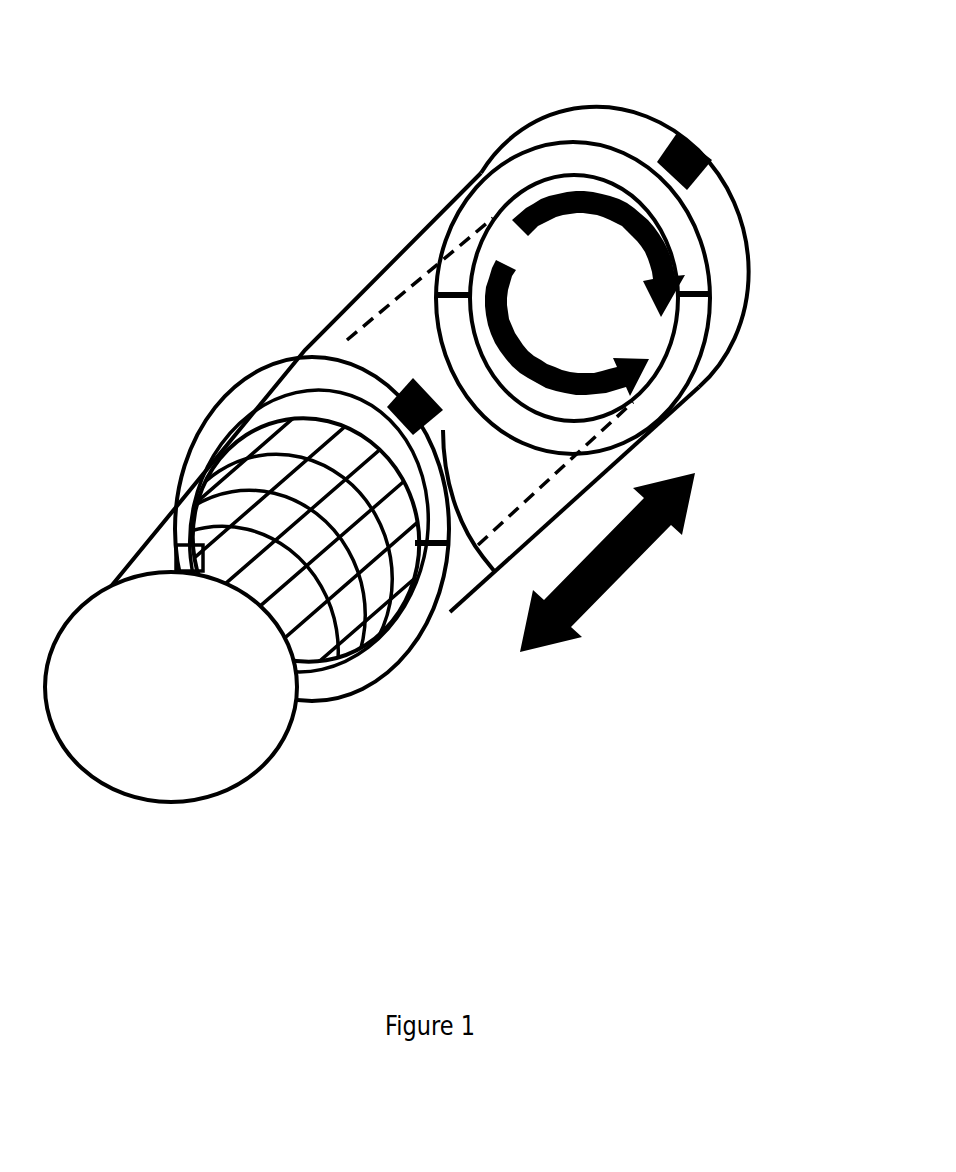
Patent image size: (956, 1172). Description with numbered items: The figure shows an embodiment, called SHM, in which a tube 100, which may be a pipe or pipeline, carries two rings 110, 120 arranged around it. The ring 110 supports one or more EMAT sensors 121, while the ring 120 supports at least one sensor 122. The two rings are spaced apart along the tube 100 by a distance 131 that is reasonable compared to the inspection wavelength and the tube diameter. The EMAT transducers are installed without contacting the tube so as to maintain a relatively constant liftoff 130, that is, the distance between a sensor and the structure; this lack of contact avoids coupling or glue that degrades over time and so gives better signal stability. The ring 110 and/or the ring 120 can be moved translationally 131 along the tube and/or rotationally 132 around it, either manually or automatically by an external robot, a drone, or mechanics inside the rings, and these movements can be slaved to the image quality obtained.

The tube 100 is at (193, 805).
The ring 110 is at (350, 374).
The ring 120 is at (727, 210).
The EMAT sensor 121 is at (407, 385).
The sensor 122 is at (652, 125).
The liftoff 130 is at (372, 426).
The distance / translational movement 131 is at (640, 568).
The rotational movement 132 is at (585, 293).